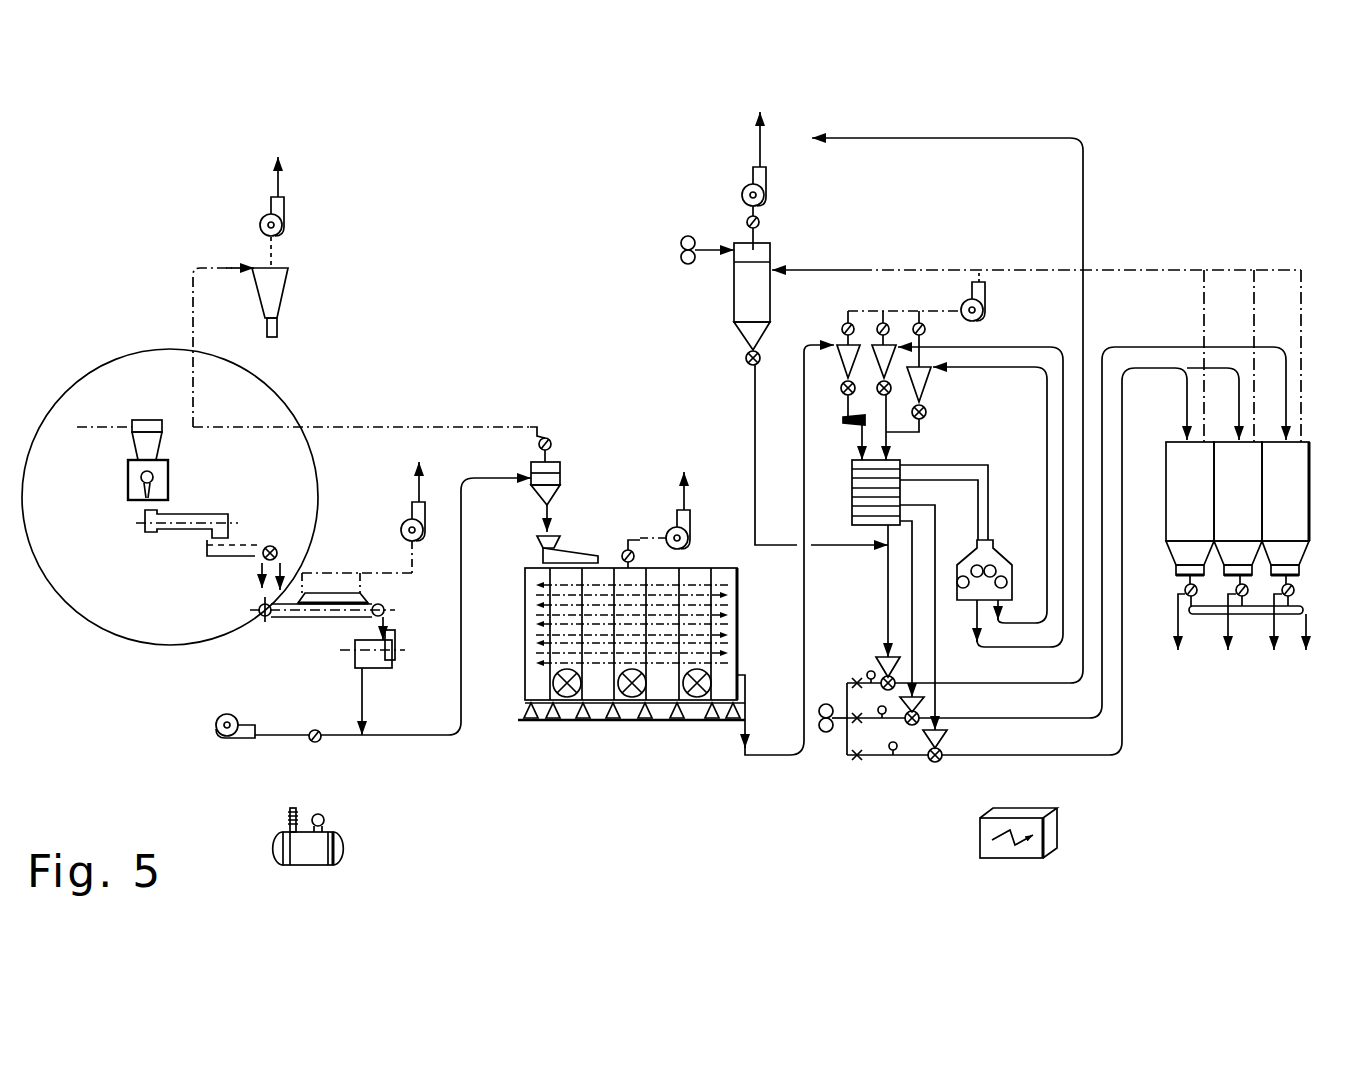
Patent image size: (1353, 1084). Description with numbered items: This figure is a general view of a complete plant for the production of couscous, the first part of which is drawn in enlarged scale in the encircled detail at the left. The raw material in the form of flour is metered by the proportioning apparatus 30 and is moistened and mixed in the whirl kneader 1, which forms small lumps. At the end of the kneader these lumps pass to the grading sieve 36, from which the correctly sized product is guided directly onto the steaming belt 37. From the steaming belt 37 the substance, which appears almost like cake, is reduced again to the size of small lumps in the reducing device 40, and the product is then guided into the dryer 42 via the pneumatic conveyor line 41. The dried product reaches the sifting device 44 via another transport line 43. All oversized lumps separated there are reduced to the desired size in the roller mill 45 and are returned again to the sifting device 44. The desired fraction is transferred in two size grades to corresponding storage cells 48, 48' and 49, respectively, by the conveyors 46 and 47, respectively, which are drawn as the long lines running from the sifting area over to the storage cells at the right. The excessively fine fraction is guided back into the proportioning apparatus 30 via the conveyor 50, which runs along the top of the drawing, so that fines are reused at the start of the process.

The whirl kneader 1 is at (207, 510).
The proportioning apparatus 30 is at (157, 483).
The grading sieve 36 is at (240, 558).
The steaming belt 37 is at (297, 618).
The reducing device 40 is at (388, 668).
The pneumatic conveyor line 41 is at (461, 716).
The dryer 42 is at (537, 725).
The transport line 43 is at (780, 762).
The sifting device 44 is at (850, 488).
The roller mill 45 is at (1007, 555).
The conveyor 46 is at (1107, 685).
The conveyor 47 is at (1128, 738).
The storage cell 48 is at (1190, 546).
The storage cell 48' is at (1238, 546).
The storage cell 49 is at (1300, 519).
The conveyor 50 is at (1073, 155).